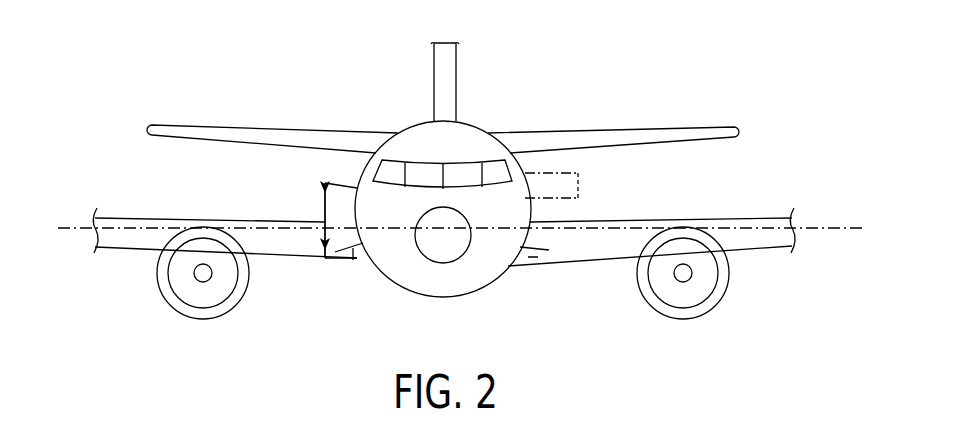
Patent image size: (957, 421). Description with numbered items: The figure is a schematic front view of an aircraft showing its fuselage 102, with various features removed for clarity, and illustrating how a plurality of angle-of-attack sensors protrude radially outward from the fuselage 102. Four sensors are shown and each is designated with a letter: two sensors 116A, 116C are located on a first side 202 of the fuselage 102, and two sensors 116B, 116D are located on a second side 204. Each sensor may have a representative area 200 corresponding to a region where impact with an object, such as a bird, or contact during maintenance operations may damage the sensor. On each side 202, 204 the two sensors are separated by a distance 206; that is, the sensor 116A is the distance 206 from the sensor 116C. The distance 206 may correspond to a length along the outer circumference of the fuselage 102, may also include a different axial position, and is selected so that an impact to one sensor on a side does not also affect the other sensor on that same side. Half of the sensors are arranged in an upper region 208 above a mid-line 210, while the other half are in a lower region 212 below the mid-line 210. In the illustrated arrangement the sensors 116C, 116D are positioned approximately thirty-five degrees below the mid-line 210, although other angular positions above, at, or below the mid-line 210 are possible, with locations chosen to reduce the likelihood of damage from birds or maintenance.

The fuselage 102 is at (410, 128).
The AOA sensor 116A is at (343, 183).
The AOA sensor 116B is at (547, 186).
The AOA sensor 116C is at (355, 258).
The AOA sensor 116D is at (528, 257).
The representative area 200 is at (553, 157).
The first side 202 is at (497, 100).
The second side 204 is at (237, 180).
The distance 206 is at (322, 213).
The upper region 208 is at (773, 147).
The mid-line 210 is at (85, 232).
The lower region 212 is at (765, 318).